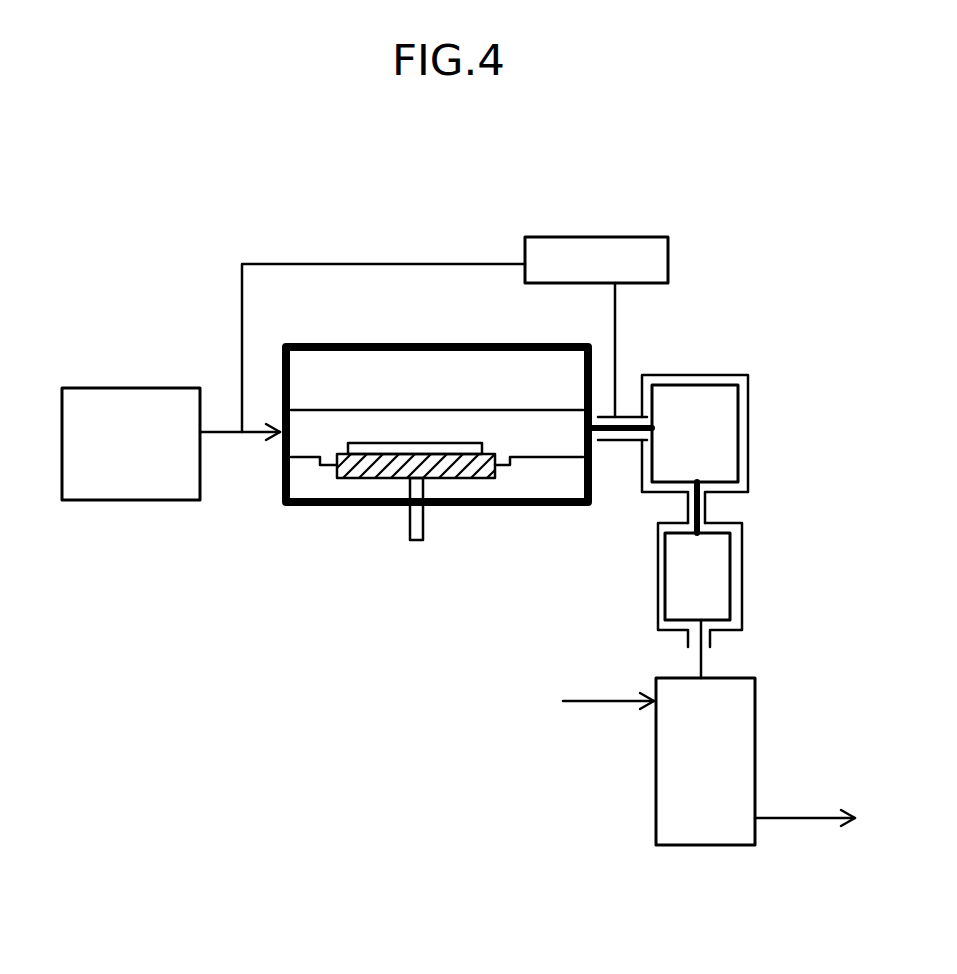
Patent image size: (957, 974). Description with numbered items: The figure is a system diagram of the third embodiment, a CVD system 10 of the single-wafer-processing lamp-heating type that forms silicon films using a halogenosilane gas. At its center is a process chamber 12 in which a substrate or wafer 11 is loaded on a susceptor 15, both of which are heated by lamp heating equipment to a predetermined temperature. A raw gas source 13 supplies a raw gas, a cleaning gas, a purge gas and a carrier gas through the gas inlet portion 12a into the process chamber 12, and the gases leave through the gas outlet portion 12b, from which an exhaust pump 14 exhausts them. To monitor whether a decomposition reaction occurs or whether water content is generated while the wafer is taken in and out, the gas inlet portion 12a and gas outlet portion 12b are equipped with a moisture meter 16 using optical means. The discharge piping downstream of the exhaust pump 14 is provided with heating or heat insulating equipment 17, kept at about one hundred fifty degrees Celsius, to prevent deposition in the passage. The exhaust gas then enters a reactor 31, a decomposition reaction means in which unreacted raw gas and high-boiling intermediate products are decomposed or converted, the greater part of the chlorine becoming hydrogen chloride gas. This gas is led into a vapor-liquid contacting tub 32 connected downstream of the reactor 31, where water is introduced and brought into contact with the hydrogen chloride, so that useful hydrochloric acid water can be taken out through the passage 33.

The CVD system 10 is at (324, 256).
The substrate 11 is at (427, 446).
The process chamber 12 is at (327, 507).
The gas inlet portion 12a is at (252, 434).
The gas outlet portion 12b is at (632, 441).
The raw gas source 13 is at (126, 388).
The exhaust pump 14 is at (733, 422).
The susceptor 15 is at (460, 470).
The moisture meter 16 is at (641, 240).
The heat insulating equipment 17 is at (730, 517).
The reactor 31 is at (723, 592).
The vapor-liquid contacting tub 32 is at (747, 708).
The passage 33 is at (797, 818).